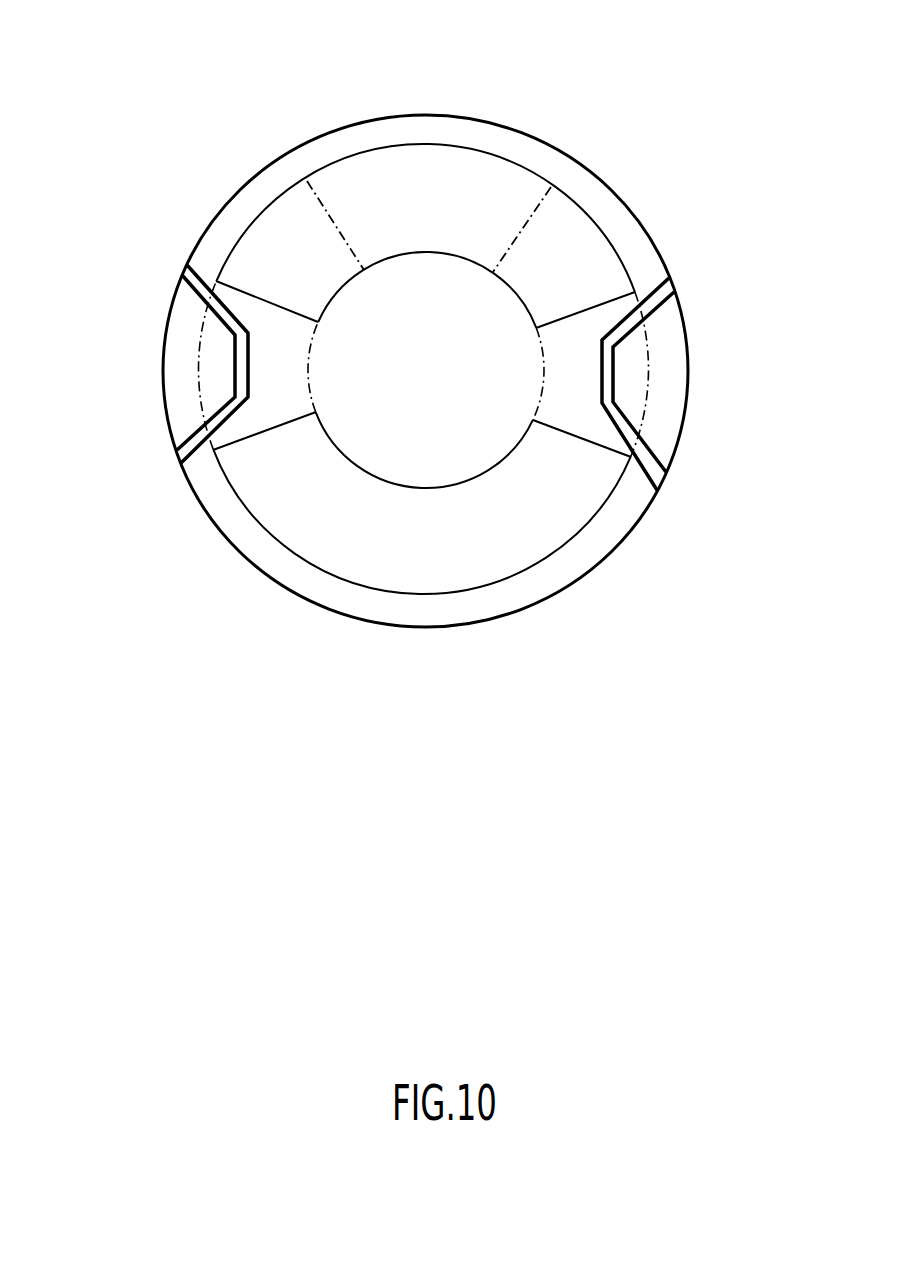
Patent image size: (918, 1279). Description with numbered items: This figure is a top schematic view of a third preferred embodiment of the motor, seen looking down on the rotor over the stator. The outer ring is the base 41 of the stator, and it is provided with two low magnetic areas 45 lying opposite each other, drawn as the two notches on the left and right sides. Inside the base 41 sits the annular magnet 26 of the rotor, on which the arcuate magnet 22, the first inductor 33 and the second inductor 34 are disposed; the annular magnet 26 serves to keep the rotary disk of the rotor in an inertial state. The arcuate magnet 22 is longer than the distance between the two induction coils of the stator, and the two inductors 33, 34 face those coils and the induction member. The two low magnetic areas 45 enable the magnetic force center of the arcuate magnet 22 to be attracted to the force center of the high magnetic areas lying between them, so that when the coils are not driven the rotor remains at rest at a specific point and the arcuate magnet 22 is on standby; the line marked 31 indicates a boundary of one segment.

The arcuate magnet 22 is at (547, 535).
The annular magnet 26 is at (352, 175).
The separating line 31 is at (537, 163).
The first inductor 33 is at (257, 252).
The second inductor 34 is at (594, 263).
The base 41 is at (223, 512).
The low magnetic areas 45 is at (187, 363).